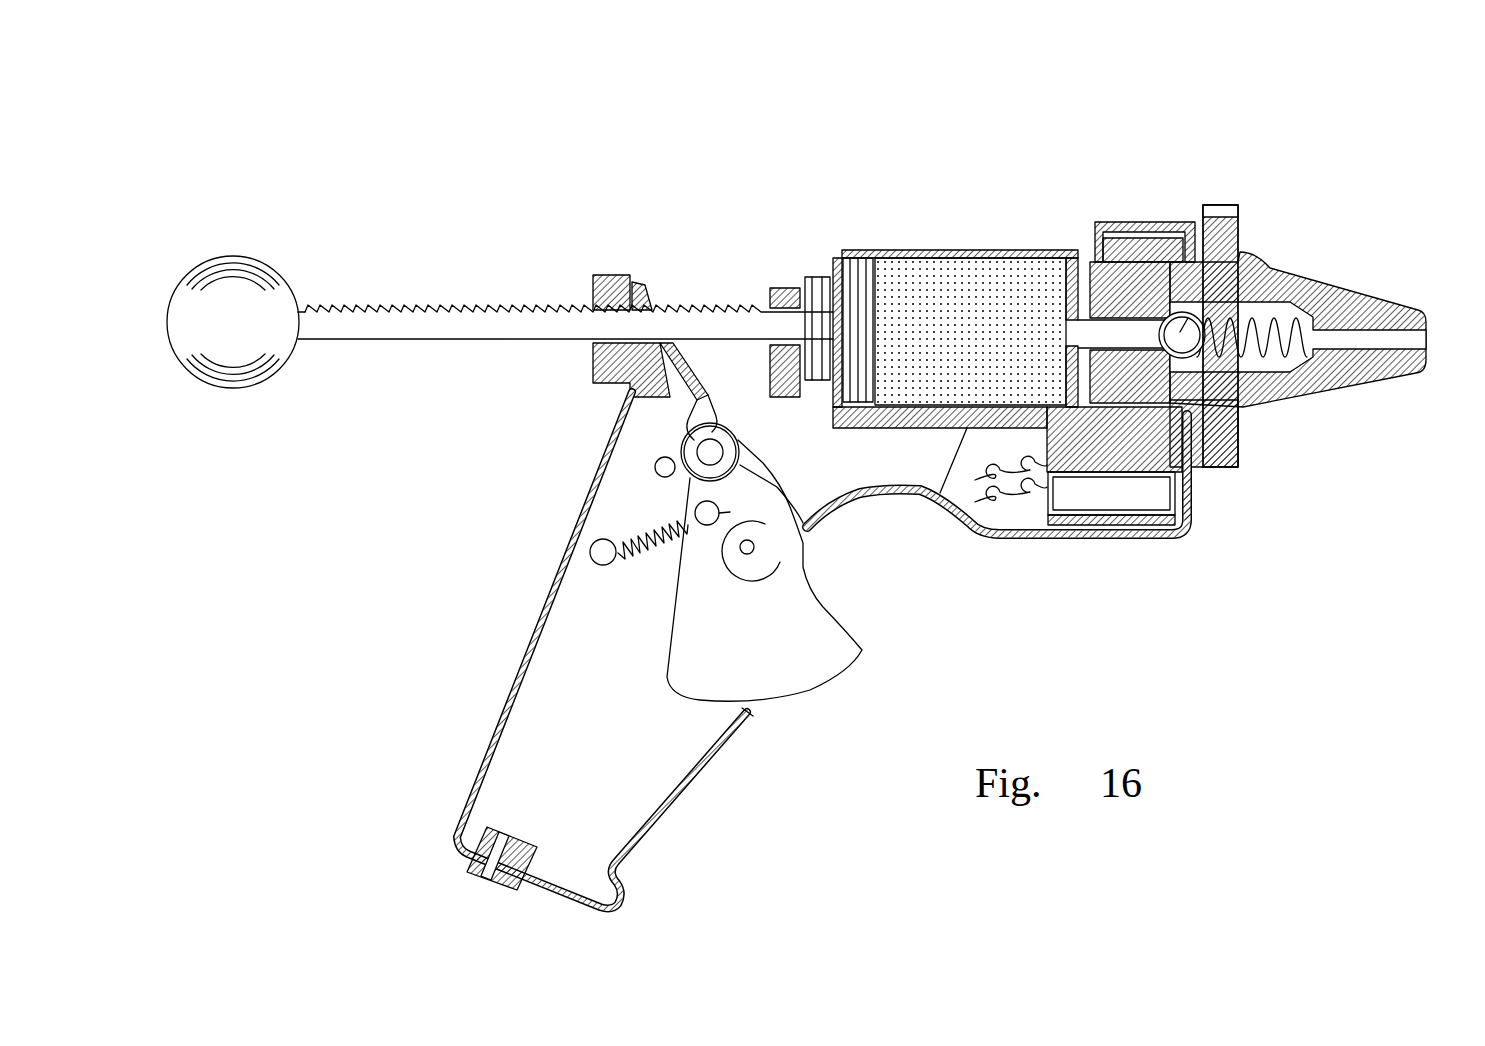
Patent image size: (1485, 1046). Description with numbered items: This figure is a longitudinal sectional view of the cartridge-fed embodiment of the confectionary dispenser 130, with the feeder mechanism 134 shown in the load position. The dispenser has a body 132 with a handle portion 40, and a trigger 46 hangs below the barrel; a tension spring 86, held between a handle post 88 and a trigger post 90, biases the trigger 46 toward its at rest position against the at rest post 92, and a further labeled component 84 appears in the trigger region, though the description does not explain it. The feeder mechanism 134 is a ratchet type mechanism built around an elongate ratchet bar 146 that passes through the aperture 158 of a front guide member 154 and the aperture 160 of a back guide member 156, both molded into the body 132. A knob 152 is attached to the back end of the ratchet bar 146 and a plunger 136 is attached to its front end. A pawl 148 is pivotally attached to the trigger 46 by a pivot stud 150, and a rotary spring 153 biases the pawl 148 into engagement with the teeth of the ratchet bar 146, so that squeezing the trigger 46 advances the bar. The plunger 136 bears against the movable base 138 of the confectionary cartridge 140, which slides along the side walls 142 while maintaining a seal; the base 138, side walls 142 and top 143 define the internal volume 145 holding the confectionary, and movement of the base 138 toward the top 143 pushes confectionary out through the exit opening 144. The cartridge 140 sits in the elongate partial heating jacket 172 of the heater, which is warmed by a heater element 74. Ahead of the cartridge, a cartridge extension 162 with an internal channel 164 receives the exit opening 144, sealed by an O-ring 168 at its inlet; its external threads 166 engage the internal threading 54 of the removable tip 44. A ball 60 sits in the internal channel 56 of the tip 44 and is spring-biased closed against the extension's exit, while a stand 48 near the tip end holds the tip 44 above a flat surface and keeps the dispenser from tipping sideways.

The handle portion 40 is at (512, 665).
The tip 44 is at (1350, 393).
The trigger 46 is at (700, 697).
The stand 48 is at (1192, 545).
The internal threading 54 is at (1170, 235).
The internal channel 56 is at (1300, 268).
The ball 60 is at (1243, 258).
The heater element 74 is at (1108, 540).
The trigger 84 is at (848, 650).
The tension spring 86 is at (660, 525).
The handle post 88 is at (592, 552).
The trigger post 90 is at (755, 553).
The at rest post 92 is at (656, 462).
The confectionary dispenser 130 is at (1040, 206).
The body 132 is at (1150, 545).
The feeder mechanism 134 is at (683, 270).
The plunger 136 is at (818, 318).
The movable base 138 is at (840, 418).
The confectionary cartridge 140 is at (898, 280).
The side walls 142 is at (975, 255).
The top 143 is at (1073, 268).
The exit opening 144 is at (1048, 320).
The internal volume 145 is at (1000, 327).
The elongate ratchet bar 146 is at (343, 304).
The pawl 148 is at (633, 280).
The pivot stud 150 is at (700, 447).
The knob 152 is at (250, 256).
The rotary spring 153 is at (778, 490).
The front guide member 154 is at (785, 290).
The back guide member 156 is at (612, 274).
The aperture 158 is at (777, 343).
The aperture 160 is at (590, 300).
The cartridge extension 162 is at (1076, 262).
The internal channel 164 is at (1222, 448).
The external threads 166 is at (1220, 336).
The O-ring 168 is at (1192, 475).
The elongate partial heating jacket 172 is at (940, 500).